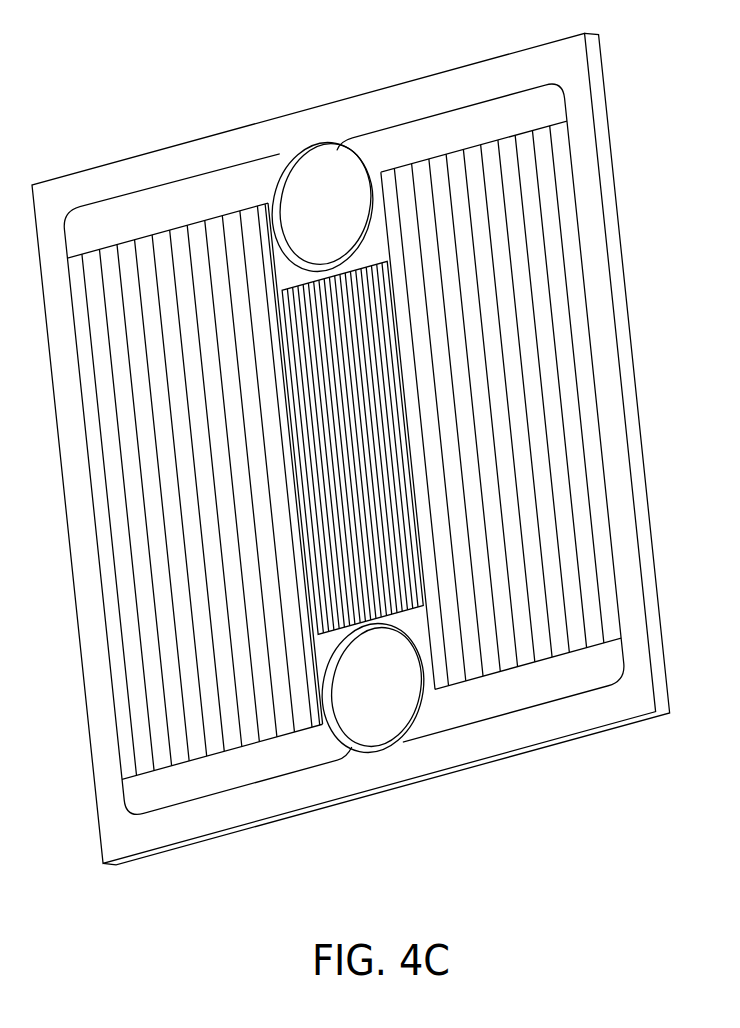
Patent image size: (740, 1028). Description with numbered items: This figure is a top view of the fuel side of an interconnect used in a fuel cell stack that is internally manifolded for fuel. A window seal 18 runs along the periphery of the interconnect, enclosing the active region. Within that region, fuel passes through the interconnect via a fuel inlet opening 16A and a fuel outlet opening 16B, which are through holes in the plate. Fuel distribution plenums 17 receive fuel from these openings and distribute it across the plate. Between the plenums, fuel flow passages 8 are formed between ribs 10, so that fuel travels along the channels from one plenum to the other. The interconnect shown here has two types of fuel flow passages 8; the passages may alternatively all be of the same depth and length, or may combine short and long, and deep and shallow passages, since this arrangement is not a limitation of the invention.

The fuel flow passages 8 is at (392, 592).
The ribs 10 is at (536, 347).
The fuel inlet opening 16A is at (327, 192).
The fuel outlet opening 16B is at (380, 722).
The fuel distribution plenums 17 is at (152, 212).
The window seal 18 is at (632, 560).